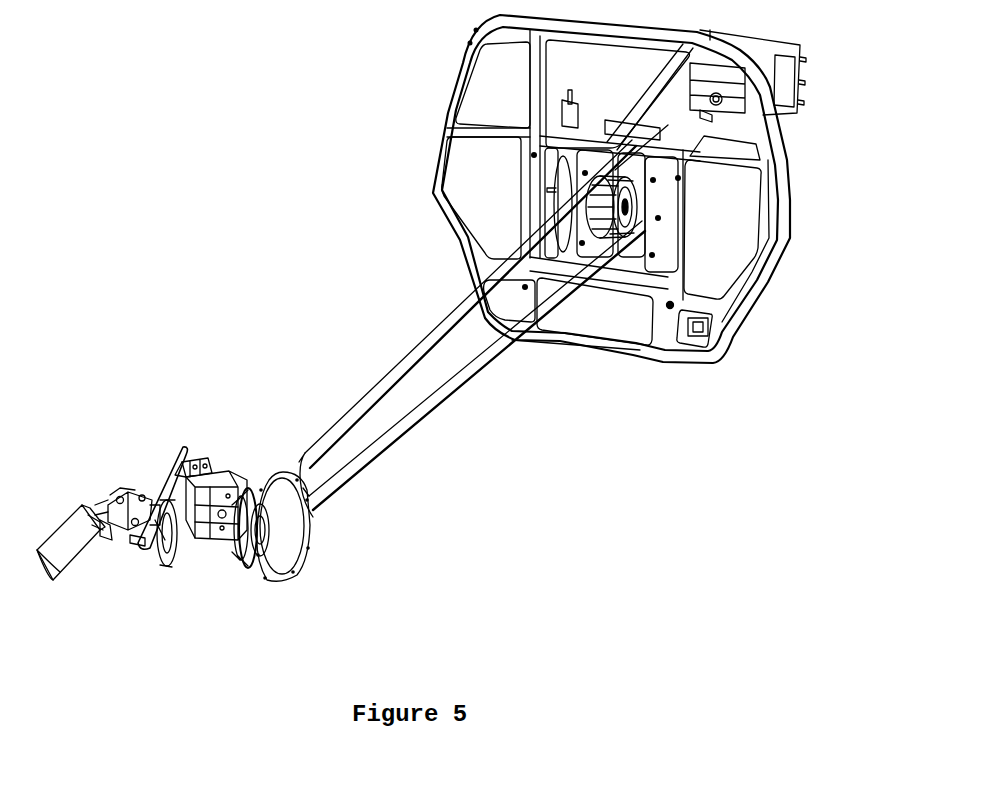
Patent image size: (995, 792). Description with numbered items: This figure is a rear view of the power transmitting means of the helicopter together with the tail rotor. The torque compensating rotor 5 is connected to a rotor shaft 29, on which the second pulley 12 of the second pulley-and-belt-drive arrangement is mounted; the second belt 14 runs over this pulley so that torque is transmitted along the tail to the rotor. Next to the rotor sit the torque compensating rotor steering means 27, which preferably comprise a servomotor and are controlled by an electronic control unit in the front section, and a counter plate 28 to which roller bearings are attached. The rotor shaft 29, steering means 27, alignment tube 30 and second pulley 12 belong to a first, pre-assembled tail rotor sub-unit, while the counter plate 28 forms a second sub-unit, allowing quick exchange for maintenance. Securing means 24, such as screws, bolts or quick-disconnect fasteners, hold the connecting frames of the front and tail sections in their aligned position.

The torque compensating rotor 5 is at (82, 534).
The second pulley 12 is at (242, 553).
The second belt 14 is at (391, 378).
The securing means 24 is at (668, 308).
The torque compensating rotor steering means 27 is at (223, 483).
The counter plate 28 is at (285, 528).
The rotor shaft 29 is at (132, 508).
The alignment tube 30 is at (200, 523).